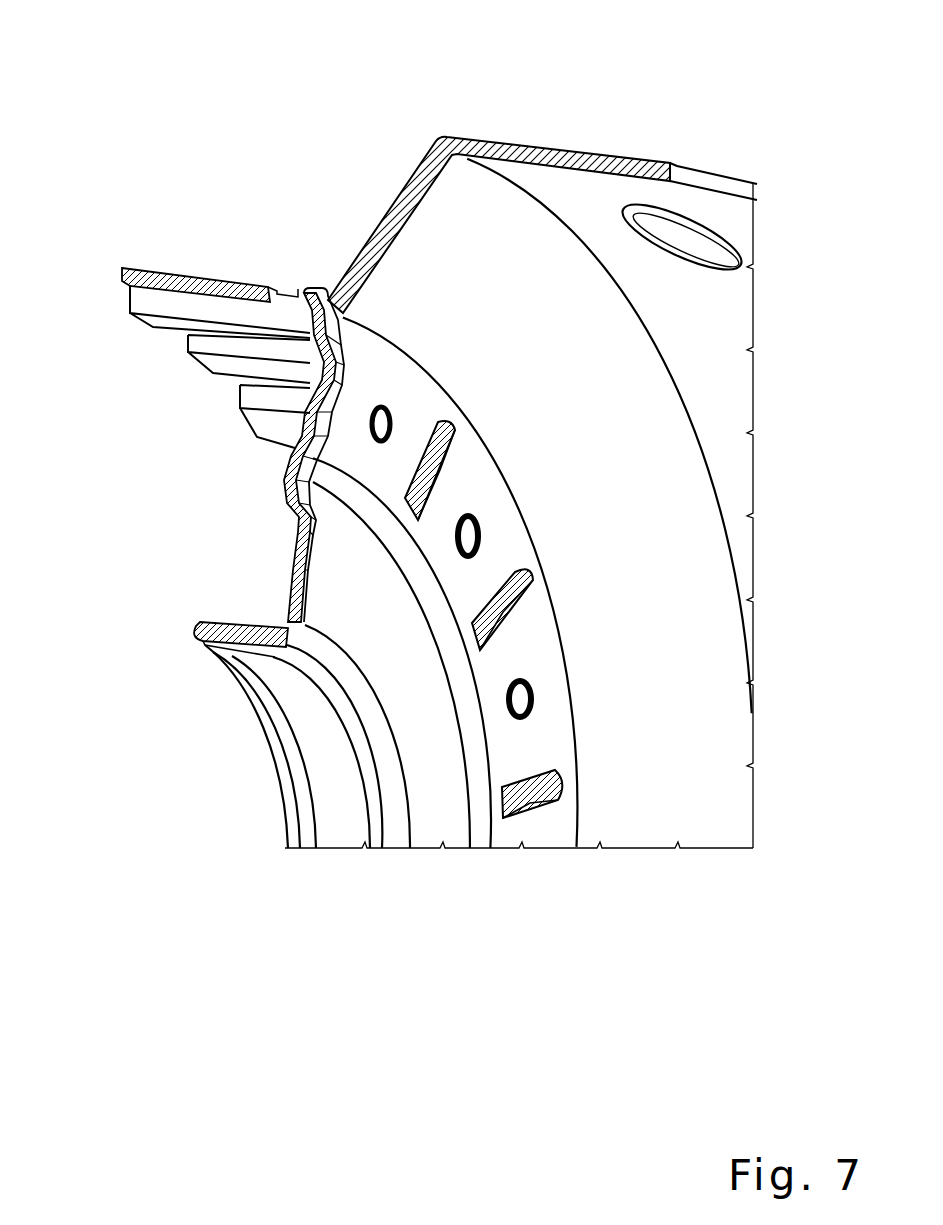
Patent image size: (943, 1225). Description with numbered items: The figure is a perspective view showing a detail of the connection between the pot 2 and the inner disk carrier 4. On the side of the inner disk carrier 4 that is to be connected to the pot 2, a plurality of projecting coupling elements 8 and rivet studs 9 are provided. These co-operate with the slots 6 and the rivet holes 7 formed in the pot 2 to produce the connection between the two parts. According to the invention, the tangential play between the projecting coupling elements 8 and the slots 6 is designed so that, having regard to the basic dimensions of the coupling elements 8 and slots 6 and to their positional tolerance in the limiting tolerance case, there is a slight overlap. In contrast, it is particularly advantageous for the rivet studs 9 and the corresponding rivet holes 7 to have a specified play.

The pot 2 is at (503, 142).
The inner disk carrier 4 is at (242, 283).
The slot 6 is at (523, 590).
The rivet hole 7 is at (513, 720).
The projecting coupling element 8 is at (405, 497).
The rivet stud 9 is at (380, 426).